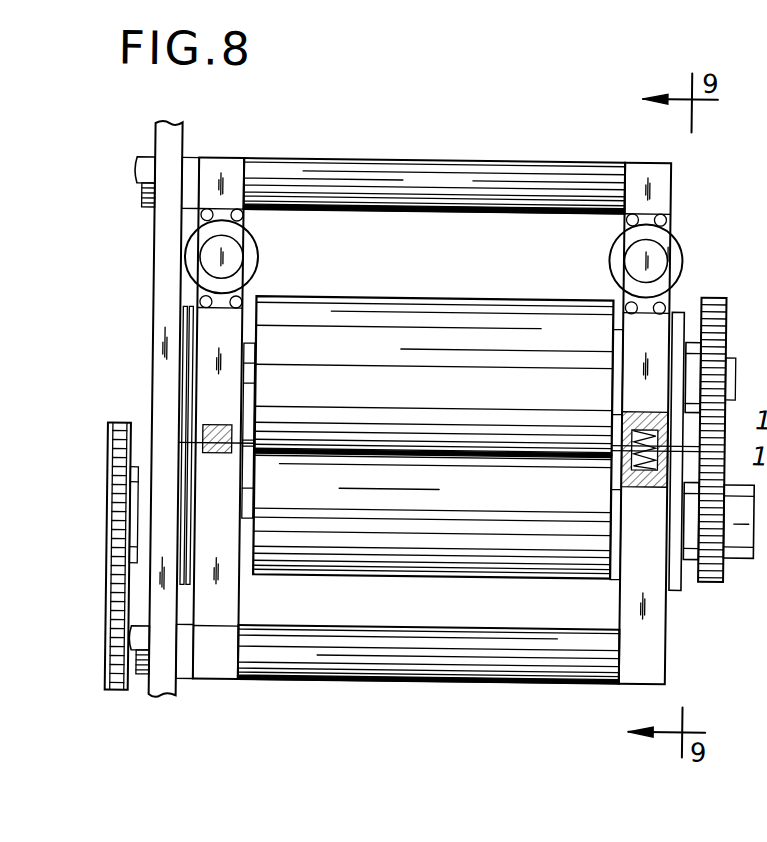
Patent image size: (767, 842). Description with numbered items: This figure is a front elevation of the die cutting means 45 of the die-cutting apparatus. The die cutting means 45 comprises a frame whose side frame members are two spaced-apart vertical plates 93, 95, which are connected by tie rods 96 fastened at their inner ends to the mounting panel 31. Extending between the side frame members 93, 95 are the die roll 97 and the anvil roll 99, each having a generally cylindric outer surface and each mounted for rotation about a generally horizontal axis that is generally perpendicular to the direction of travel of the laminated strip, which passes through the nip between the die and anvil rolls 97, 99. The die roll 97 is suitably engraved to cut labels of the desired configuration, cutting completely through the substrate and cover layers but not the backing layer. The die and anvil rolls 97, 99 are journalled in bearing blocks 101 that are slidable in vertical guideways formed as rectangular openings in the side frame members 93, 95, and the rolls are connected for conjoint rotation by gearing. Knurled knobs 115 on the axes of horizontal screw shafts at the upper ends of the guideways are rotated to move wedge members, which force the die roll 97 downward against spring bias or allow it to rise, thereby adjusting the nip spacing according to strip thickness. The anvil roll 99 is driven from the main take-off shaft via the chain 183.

The mounting panel 31 is at (163, 381).
The die cutting means 45 is at (544, 110).
The vertical plate 93 is at (224, 682).
The vertical plate 95 is at (658, 665).
The tie rods 96 is at (425, 159).
The die roll 97 is at (471, 296).
The anvil roll 99 is at (454, 583).
The bearing blocks 101 is at (189, 316).
The knurled knobs 115 is at (256, 274).
The chain 183 is at (133, 685).